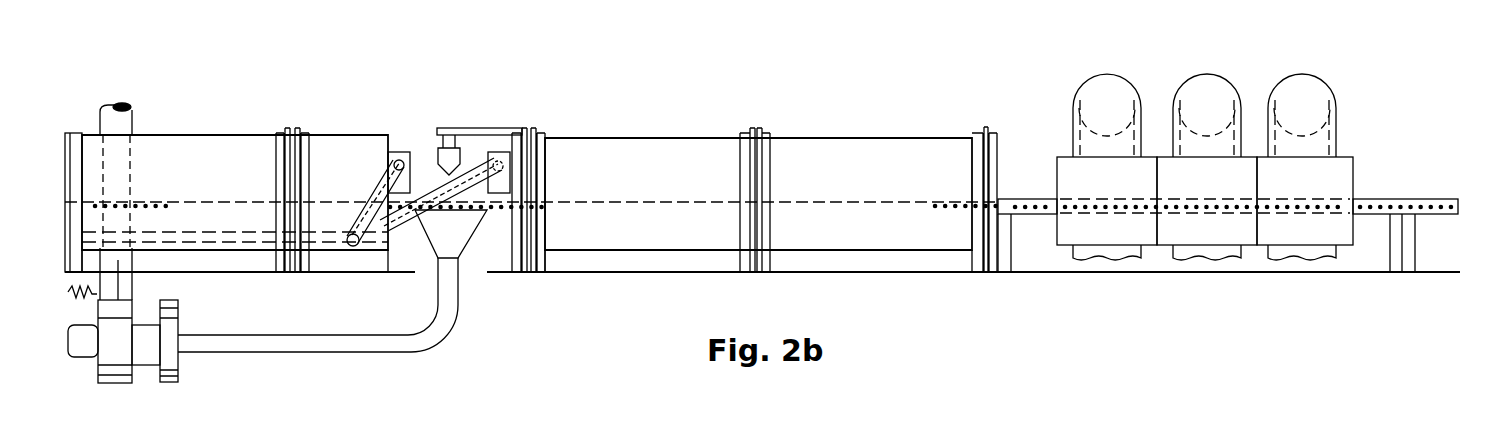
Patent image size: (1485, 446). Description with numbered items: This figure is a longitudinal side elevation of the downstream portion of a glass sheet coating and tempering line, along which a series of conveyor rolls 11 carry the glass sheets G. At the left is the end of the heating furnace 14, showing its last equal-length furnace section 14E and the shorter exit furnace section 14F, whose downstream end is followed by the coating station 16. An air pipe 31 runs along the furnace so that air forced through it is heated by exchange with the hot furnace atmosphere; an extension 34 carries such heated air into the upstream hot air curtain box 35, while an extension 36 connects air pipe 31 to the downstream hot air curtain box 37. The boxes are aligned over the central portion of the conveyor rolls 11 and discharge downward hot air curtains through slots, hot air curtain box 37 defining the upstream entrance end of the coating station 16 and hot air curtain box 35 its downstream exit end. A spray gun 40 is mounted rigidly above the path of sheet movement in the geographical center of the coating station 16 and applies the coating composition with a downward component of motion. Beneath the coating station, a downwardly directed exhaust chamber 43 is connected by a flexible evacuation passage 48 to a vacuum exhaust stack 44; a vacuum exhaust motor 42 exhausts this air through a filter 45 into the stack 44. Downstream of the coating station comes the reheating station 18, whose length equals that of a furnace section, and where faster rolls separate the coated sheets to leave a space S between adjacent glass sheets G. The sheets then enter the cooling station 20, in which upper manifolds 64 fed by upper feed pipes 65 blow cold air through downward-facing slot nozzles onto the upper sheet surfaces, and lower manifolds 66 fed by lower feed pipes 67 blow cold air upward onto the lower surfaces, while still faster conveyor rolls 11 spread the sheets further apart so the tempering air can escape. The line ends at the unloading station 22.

The conveyor rolls 11 is at (940, 206).
The heating furnace 14 is at (332, 131).
The furnace section 14E is at (135, 289).
The exit furnace section 14F is at (385, 289).
The coating station 16 is at (432, 118).
The reheating station 18 is at (699, 122).
The cooling station 20 is at (1066, 120).
The unloading station 22 is at (1428, 184).
The air pipe 31 is at (204, 234).
The extension 34 is at (463, 191).
The upstream hot air curtain box 35 is at (498, 152).
The extension 36 is at (384, 191).
The downstream hot air curtain box 37 is at (398, 152).
The spray gun 40 is at (440, 152).
The vacuum exhaust motor 42 is at (92, 352).
The exhaust chamber 43 is at (460, 236).
The vacuum exhaust stack 44 is at (122, 110).
The filter 45 is at (158, 355).
The evacuation passage 48 is at (398, 348).
The upper manifolds 64 is at (1122, 188).
The upper feed pipes 65 is at (1107, 86).
The lower manifolds 66 is at (1122, 241).
The lower feed pipes 67 is at (1140, 252).
The space S is at (856, 202).
The glass sheets G is at (866, 206).